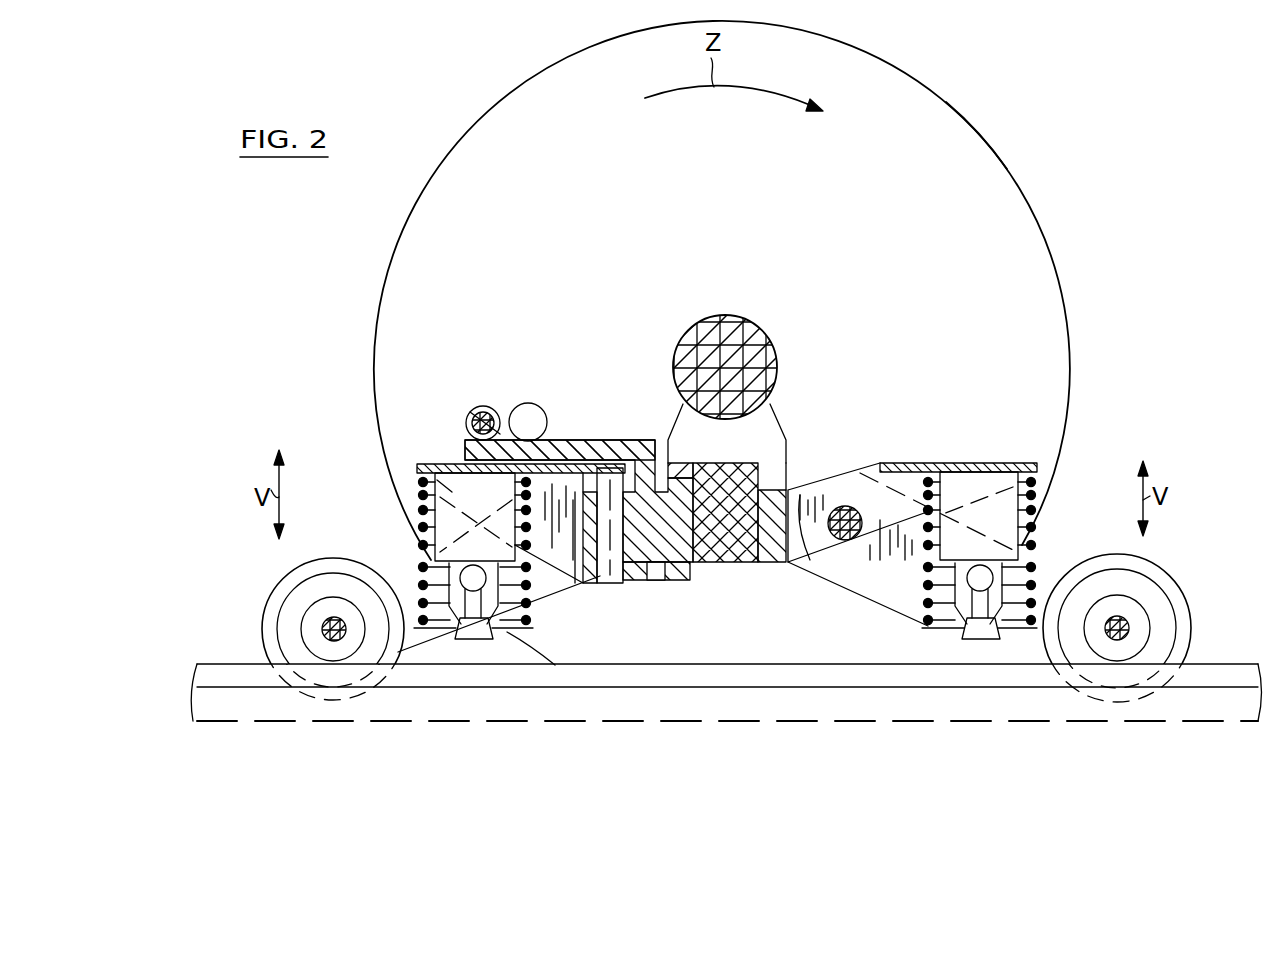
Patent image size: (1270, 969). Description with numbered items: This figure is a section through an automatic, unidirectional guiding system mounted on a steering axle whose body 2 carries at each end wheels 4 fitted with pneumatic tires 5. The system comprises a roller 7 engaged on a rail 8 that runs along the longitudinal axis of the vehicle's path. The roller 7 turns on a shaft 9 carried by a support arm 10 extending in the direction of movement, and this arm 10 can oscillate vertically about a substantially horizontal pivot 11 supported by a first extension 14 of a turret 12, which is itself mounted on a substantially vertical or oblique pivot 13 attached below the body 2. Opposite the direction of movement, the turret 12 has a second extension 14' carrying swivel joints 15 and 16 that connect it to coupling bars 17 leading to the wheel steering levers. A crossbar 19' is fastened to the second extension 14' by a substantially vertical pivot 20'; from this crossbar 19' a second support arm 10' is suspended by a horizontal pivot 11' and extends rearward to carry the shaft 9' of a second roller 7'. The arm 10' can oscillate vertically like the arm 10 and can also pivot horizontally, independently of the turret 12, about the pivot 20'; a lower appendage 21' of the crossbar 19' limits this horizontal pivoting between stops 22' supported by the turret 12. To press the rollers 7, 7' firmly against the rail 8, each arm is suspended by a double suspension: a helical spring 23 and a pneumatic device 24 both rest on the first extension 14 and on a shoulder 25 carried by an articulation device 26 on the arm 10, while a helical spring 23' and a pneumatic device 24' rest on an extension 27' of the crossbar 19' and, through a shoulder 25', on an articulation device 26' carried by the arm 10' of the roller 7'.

The body 2 is at (763, 357).
The wheel 4 is at (1020, 235).
The pneumatic tire 5 is at (963, 118).
The roller 7 is at (1124, 617).
The second roller 7' is at (308, 629).
The rail 8 is at (1207, 676).
The shaft 9 is at (1167, 613).
The shaft of second roller 9' is at (288, 591).
The support arm 10 is at (1010, 550).
The second support arm 10' is at (446, 553).
The horizontal pivot 11 is at (831, 572).
The horizontal pivot 11' is at (579, 459).
The turret 12 is at (773, 490).
The pivot 13 is at (741, 560).
The first extension 14 is at (900, 470).
The second extension 14' is at (560, 408).
The swivel joint 15 is at (529, 403).
The swivel joint 16 is at (484, 406).
The coupling bar 17 is at (473, 410).
The crossbar 19' is at (587, 557).
The vertical pivot 20' is at (622, 555).
The lower appendage 21' is at (664, 597).
The stops 22' is at (674, 596).
The helical spring 23 is at (996, 466).
The helical spring 23' is at (424, 508).
The pneumatic device 24 is at (958, 431).
The pneumatic device 24' is at (478, 446).
The shoulder 25 is at (923, 610).
The shoulder 25' is at (502, 642).
The articulation device 26 is at (971, 641).
The articulation device 26' is at (448, 643).
The extension of crossbar 27' is at (417, 424).